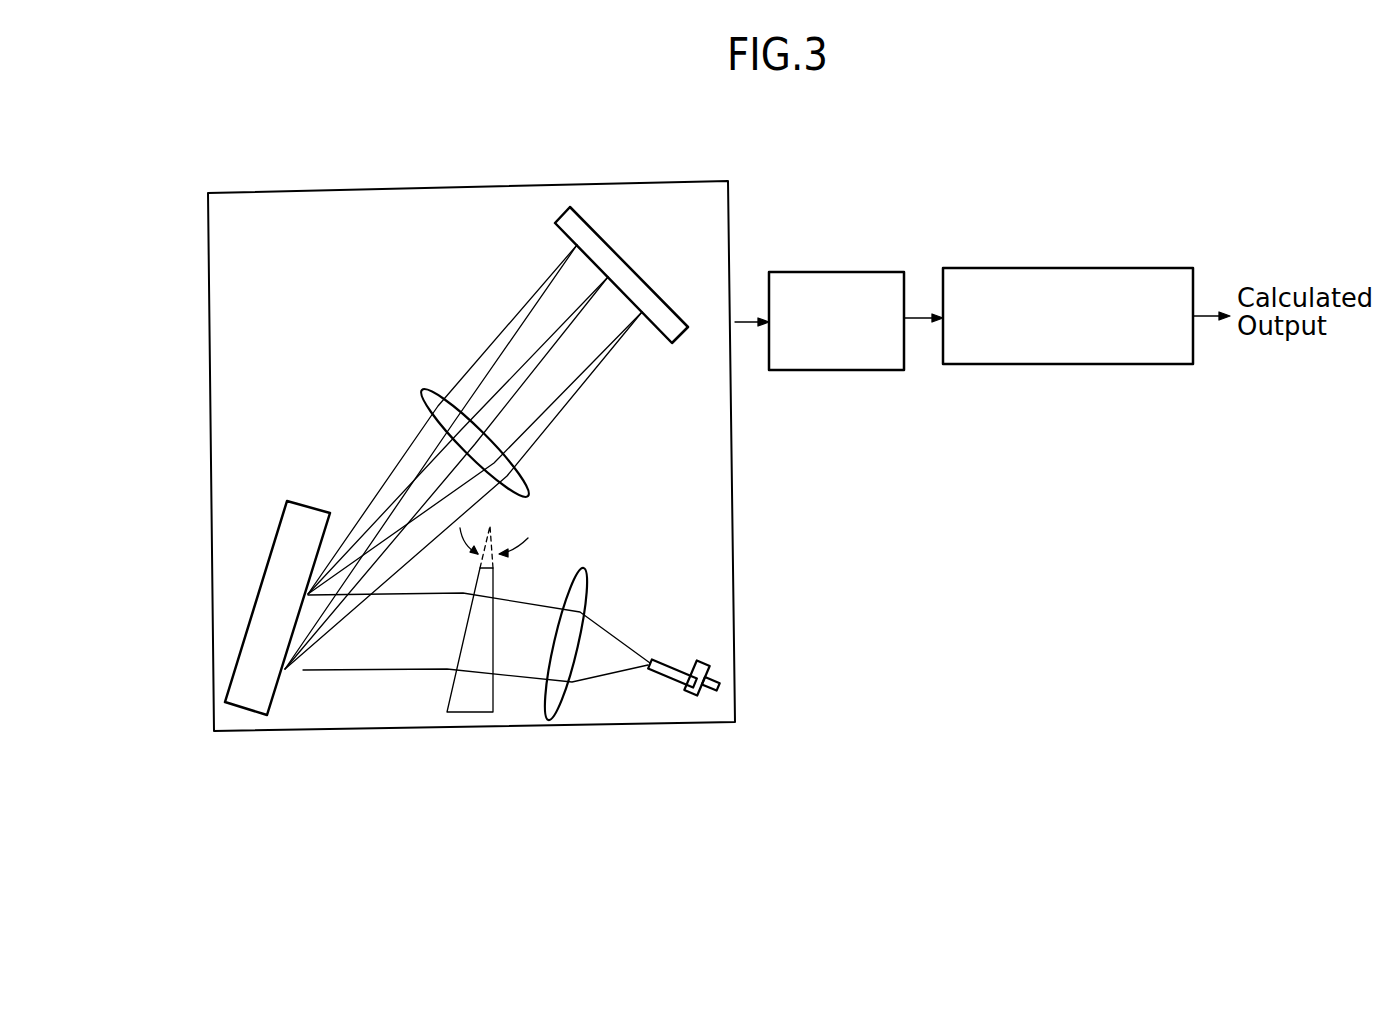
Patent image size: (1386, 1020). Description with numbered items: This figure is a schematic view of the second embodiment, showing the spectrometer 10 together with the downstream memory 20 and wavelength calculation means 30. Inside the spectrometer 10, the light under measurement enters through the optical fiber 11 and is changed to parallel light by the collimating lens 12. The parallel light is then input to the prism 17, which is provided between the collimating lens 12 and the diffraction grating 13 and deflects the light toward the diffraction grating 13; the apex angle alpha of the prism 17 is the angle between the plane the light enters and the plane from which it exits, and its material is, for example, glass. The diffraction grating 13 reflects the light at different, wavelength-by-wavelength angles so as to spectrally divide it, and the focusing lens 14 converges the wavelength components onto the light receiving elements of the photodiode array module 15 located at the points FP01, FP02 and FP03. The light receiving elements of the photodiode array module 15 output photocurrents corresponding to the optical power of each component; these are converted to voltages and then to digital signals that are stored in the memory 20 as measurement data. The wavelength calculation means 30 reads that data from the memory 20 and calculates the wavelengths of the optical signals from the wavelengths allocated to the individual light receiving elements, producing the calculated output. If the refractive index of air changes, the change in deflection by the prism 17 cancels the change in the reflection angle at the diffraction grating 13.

The spectrometer 10 is at (272, 192).
The optical fiber 11 is at (700, 661).
The collimating lens 12 is at (563, 694).
The diffraction grating 13 is at (241, 706).
The focusing lens 14 is at (440, 395).
The photodiode array module 15 is at (682, 338).
The prism 17 is at (471, 713).
The memory 20 is at (867, 272).
The wavelength calculation means 30 is at (1068, 268).
The point FP01 is at (577, 245).
The point FP02 is at (608, 277).
The point FP03 is at (642, 312).